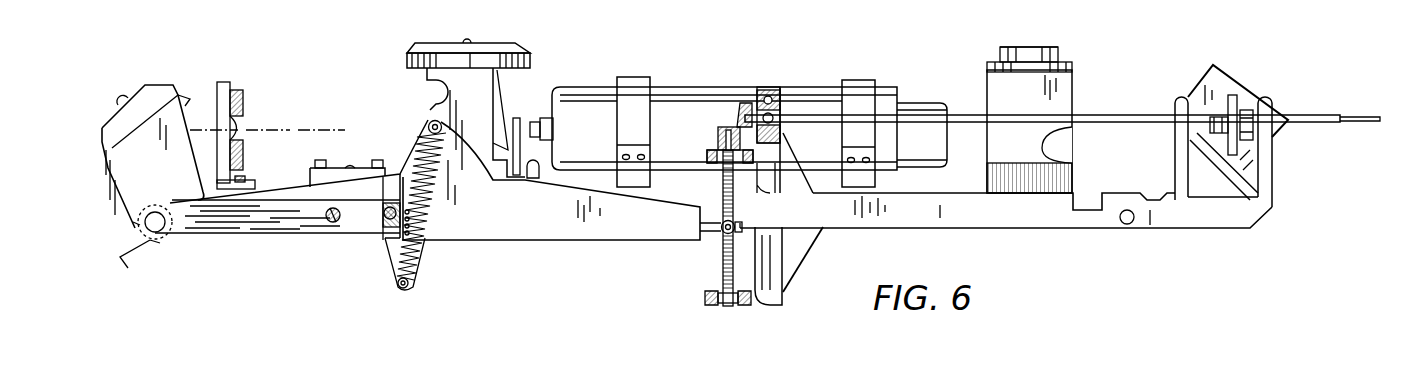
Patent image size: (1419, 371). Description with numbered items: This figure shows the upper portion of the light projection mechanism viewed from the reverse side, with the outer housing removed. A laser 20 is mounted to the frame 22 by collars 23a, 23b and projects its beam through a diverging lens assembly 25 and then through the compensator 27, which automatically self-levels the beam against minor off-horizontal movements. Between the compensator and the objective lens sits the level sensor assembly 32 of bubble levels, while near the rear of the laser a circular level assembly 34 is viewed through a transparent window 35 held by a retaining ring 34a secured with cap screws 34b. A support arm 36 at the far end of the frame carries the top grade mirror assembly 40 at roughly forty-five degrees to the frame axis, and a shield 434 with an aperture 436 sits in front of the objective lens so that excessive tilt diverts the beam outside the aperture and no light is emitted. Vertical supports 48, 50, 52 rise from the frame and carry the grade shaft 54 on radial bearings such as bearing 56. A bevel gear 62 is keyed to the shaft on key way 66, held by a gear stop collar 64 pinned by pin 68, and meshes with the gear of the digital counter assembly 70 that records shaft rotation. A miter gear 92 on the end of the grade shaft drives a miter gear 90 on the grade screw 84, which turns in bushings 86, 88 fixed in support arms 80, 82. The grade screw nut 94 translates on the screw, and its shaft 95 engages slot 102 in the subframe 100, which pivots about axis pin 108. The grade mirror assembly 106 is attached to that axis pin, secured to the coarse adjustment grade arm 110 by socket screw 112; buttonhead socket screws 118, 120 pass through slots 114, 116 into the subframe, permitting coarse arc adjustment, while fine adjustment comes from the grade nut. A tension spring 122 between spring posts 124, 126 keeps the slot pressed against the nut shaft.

The laser 20 is at (683, 119).
The frame 22 is at (1040, 212).
The collar 23a is at (858, 88).
The collar 23b is at (632, 82).
The diverging lens assembly 25 is at (518, 117).
The compensator 27 is at (490, 113).
The level sensor assembly 32 is at (354, 150).
The circular level assembly 34 is at (1016, 102).
The retaining ring 34a is at (1074, 68).
The cap screws 34b is at (1000, 50).
The transparent window 35 is at (1036, 34).
The support arm 36 is at (155, 184).
The top grade mirror assembly 40 is at (185, 96).
The vertical support 48 is at (781, 96).
The vertical support 50 is at (1177, 98).
The vertical support 52 is at (1274, 110).
The grade shaft 54 is at (1345, 111).
The radial bearing 56 is at (766, 93).
The bevel gear 62 is at (1248, 108).
The gear stop collar 64 is at (1231, 104).
The key way 66 is at (1262, 148).
The pin 68 is at (1212, 150).
The digital counter assembly 70 is at (1200, 90).
The support arm 80 is at (793, 183).
The support arm 82 is at (775, 292).
The grade screw 84 is at (722, 272).
The bushing 86 is at (716, 137).
The bushing 88 is at (706, 300).
The miter gear 90 is at (740, 114).
The miter gear 92 is at (756, 94).
The grade screw nut 94 is at (718, 237).
The shaft 95 is at (721, 228).
The subframe 100 is at (532, 224).
The slot 102 is at (765, 192).
The grade mirror assembly 106 is at (150, 247).
The axis pin 108 is at (162, 238).
The coarse adjustment grade arm 110 is at (267, 220).
The socket screw 112 is at (133, 222).
The slot 114 is at (330, 224).
The slot 116 is at (385, 222).
The buttonhead socket screw 118 is at (337, 228).
The buttonhead socket screw 120 is at (397, 203).
The tension spring 122 is at (420, 162).
The spring post 124 is at (428, 125).
The spring post 126 is at (410, 290).
The shield 434 is at (243, 95).
The aperture 436 is at (245, 128).